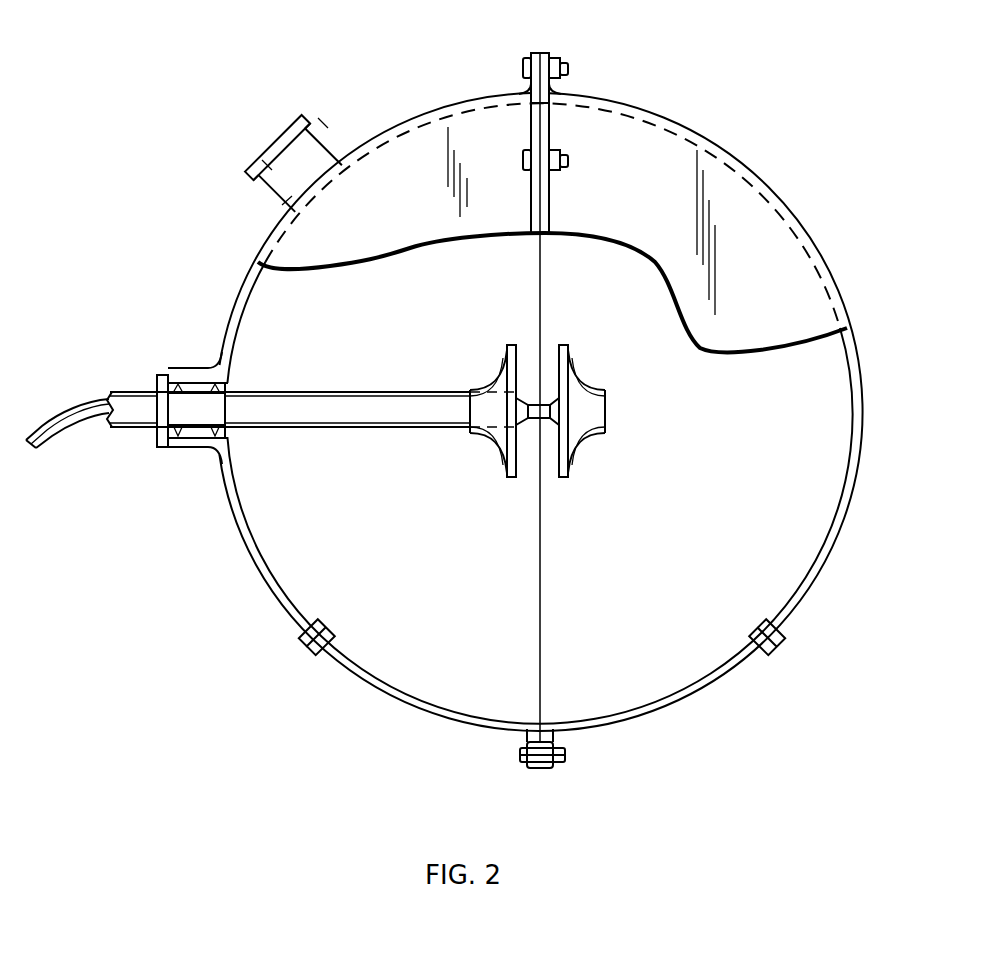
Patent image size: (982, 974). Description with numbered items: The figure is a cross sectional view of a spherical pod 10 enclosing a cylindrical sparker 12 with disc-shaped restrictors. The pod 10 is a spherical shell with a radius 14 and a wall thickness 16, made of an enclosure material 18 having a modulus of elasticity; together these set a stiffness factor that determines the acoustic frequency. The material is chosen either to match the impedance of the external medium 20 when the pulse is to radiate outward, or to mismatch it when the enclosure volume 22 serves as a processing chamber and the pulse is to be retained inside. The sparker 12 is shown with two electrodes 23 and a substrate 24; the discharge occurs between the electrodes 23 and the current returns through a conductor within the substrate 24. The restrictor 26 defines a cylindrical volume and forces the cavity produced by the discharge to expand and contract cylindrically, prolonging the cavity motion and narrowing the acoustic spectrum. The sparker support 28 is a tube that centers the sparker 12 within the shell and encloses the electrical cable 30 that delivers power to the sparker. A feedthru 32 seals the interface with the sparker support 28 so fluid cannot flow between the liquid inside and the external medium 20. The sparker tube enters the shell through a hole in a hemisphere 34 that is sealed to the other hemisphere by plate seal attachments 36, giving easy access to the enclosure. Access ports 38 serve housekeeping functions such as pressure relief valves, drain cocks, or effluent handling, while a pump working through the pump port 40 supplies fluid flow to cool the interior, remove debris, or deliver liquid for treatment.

The spherical pod 10 is at (652, 106).
The sparker 12 is at (537, 440).
The radius 14 is at (528, 442).
The thickness 16 is at (246, 540).
The enclosure material 18 is at (650, 727).
The external medium 20 is at (798, 144).
The enclosure volume 22 is at (784, 521).
The electrodes 23 is at (524, 385).
The substrate 24 is at (556, 440).
The restrictor 26 is at (472, 436).
The sparker support 28 is at (388, 392).
The electrical cable 30 is at (55, 437).
The feedthru 32 is at (160, 375).
The hemisphere 34 is at (428, 114).
The plate seal attachments 36 is at (531, 58).
The access ports 38 is at (776, 648).
The pump port 40 is at (257, 168).